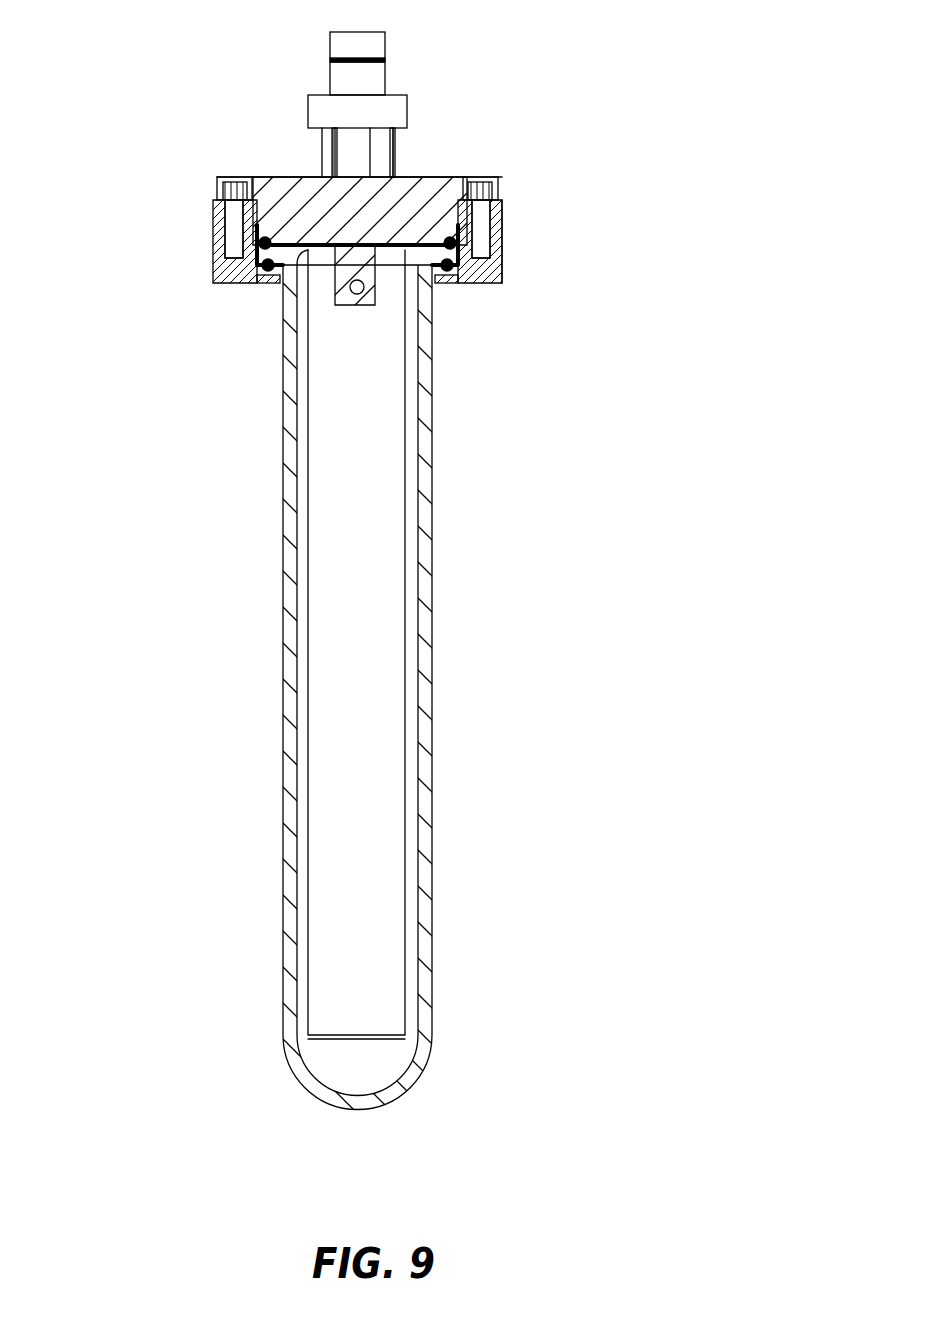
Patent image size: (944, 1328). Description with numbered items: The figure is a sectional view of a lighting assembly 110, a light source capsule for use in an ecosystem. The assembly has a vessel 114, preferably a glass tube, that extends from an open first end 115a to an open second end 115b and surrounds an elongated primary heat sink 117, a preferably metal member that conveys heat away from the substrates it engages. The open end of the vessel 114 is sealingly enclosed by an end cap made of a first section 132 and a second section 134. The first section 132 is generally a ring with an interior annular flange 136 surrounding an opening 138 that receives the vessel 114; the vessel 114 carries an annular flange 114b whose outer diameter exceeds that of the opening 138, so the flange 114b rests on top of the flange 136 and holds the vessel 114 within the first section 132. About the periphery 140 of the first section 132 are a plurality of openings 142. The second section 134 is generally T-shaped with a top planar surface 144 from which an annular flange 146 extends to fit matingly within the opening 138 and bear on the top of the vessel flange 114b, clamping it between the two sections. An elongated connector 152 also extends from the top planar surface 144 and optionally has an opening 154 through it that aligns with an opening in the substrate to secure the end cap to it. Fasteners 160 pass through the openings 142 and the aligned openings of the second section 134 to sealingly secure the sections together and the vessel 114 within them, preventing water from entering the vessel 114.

The lighting assembly 110 is at (561, 170).
The vessel 114 is at (286, 1036).
The annular flange 114b is at (253, 278).
The first end 115a is at (463, 1078).
The second end 115b is at (495, 284).
The primary heat sink 117 is at (354, 663).
The first section 132 is at (217, 277).
The second section 134 is at (290, 198).
The annular flange 136 is at (452, 270).
The opening 138 is at (290, 268).
The periphery 140 is at (508, 235).
The openings 142 is at (502, 248).
The top planar surface 144 is at (450, 240).
The annular flange 146 is at (410, 258).
The elongated connector 152 is at (303, 292).
The opening 154 is at (352, 296).
The fasteners 160 is at (217, 202).